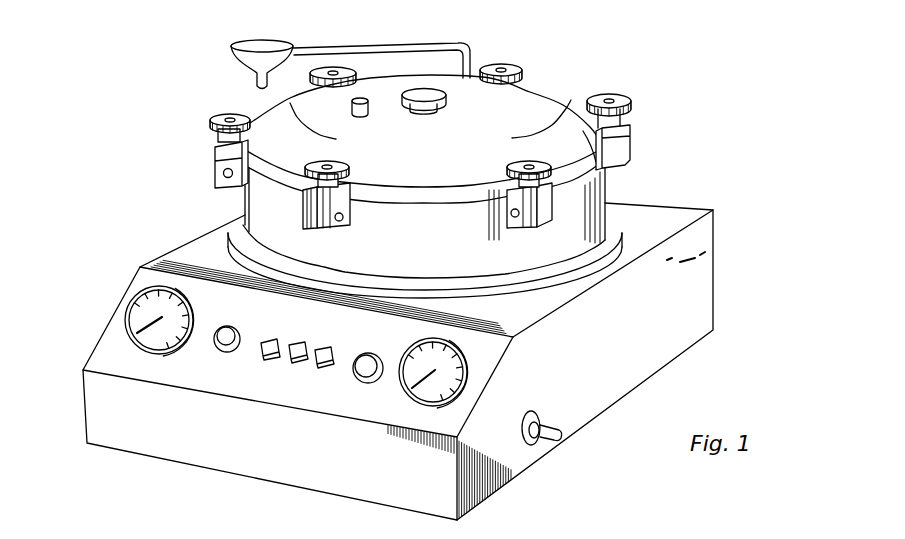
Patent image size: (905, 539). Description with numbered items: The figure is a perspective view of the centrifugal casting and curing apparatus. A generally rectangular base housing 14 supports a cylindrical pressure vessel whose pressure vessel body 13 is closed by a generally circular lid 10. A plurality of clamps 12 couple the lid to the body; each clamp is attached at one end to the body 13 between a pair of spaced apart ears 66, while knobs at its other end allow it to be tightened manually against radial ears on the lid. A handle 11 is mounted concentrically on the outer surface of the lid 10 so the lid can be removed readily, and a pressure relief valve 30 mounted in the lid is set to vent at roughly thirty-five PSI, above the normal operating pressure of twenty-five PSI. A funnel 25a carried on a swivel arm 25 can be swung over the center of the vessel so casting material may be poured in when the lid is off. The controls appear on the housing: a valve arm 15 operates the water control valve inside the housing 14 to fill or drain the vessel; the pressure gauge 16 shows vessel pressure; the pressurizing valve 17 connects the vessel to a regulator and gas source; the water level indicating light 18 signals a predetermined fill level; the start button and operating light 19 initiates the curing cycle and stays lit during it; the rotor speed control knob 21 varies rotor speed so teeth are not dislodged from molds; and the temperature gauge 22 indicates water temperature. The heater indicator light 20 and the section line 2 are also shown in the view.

The section line 2- 2 is at (58, 237).
The lid 10 is at (537, 98).
The handle 11 is at (428, 93).
The clamps 12 is at (214, 118).
The pressure vessel body 13 is at (605, 184).
The base housing 14 is at (703, 293).
The valve arm 15 is at (550, 445).
The pressure gauge 16 is at (467, 372).
The pressurizing valve 17 is at (370, 383).
The water level indicating light 18 is at (327, 348).
The start button and operating light 19 is at (293, 360).
The push button switch 20 is at (268, 340).
The rotor speed control knob 21 is at (222, 352).
The temperature gauge 22 is at (152, 347).
The swivel arm 25 is at (472, 44).
The funnel 25a is at (242, 46).
The pressure relief valve 30 is at (364, 99).
The ears 66 is at (222, 152).